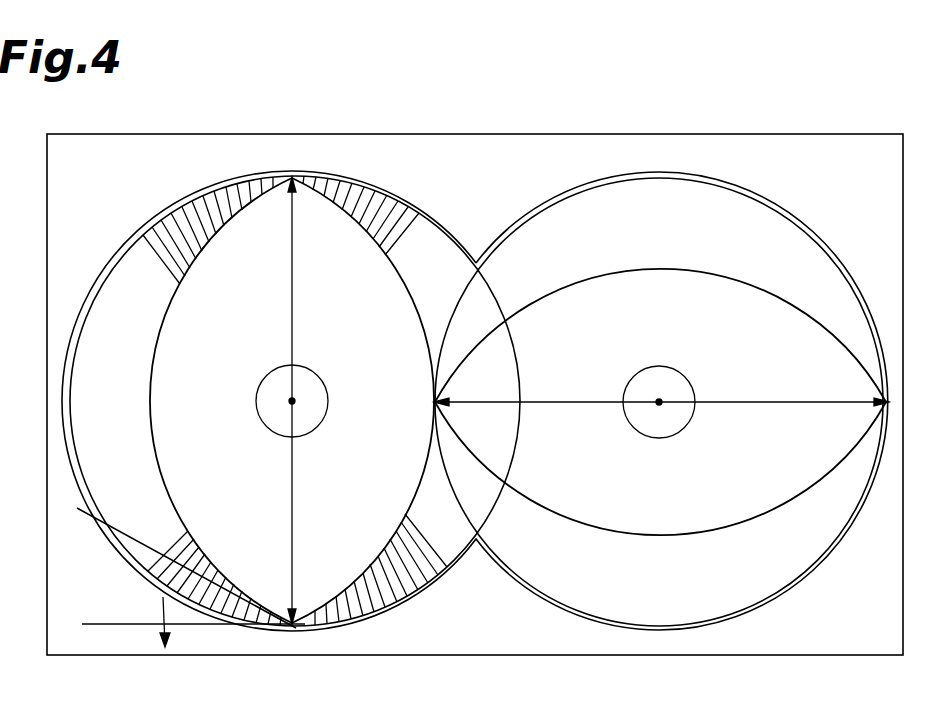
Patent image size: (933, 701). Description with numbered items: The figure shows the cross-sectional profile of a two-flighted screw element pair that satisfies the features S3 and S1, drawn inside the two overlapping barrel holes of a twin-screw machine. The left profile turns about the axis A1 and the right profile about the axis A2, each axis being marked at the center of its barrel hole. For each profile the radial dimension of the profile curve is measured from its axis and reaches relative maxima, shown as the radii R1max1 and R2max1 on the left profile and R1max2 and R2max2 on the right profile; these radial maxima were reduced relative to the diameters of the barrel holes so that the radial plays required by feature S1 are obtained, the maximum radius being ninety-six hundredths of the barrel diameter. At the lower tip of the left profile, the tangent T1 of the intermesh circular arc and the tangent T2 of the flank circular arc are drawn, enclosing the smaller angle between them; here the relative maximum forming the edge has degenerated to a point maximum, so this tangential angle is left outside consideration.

The axis of rotation of first rotor A1 is at (293, 400).
The axis of rotation of second rotor A2 is at (659, 402).
The first radial maximum of the first profile R1max1 is at (294, 530).
The second radial maximum of the first profile R2max1 is at (293, 292).
The first radial maximum of the second profile R1max2 is at (533, 403).
The second radial maximum of the second profile R2max2 is at (782, 402).
The tangent of the intermesh circular arc T1 is at (178, 626).
The tangent of the flank circular arc T2 is at (172, 564).